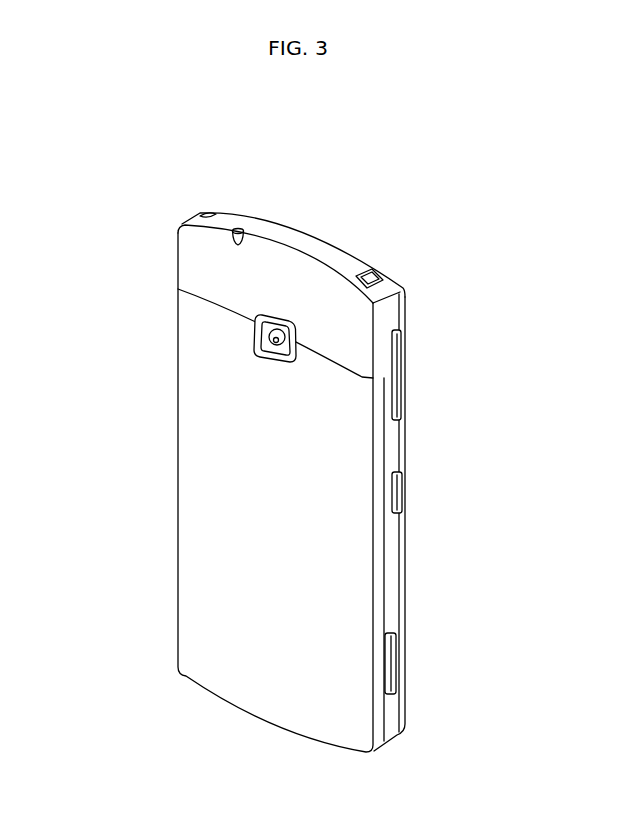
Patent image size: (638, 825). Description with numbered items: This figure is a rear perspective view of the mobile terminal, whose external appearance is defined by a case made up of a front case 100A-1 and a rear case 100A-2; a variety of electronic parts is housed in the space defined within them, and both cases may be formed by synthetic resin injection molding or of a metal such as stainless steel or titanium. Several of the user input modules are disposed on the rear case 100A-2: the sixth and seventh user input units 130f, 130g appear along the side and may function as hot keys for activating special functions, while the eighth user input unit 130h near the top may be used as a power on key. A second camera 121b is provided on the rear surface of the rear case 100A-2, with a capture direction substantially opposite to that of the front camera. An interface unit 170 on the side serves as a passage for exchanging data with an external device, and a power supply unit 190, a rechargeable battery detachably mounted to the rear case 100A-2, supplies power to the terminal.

The front case 100A-1 is at (220, 212).
The rear case 100A-2 is at (200, 219).
The eighth user input unit 130h is at (369, 280).
The sixth user input unit 130f is at (397, 358).
The seventh user input unit 130g is at (398, 502).
The interface unit 170 is at (387, 664).
The second camera 121b is at (264, 343).
The power supply unit 190 is at (198, 533).